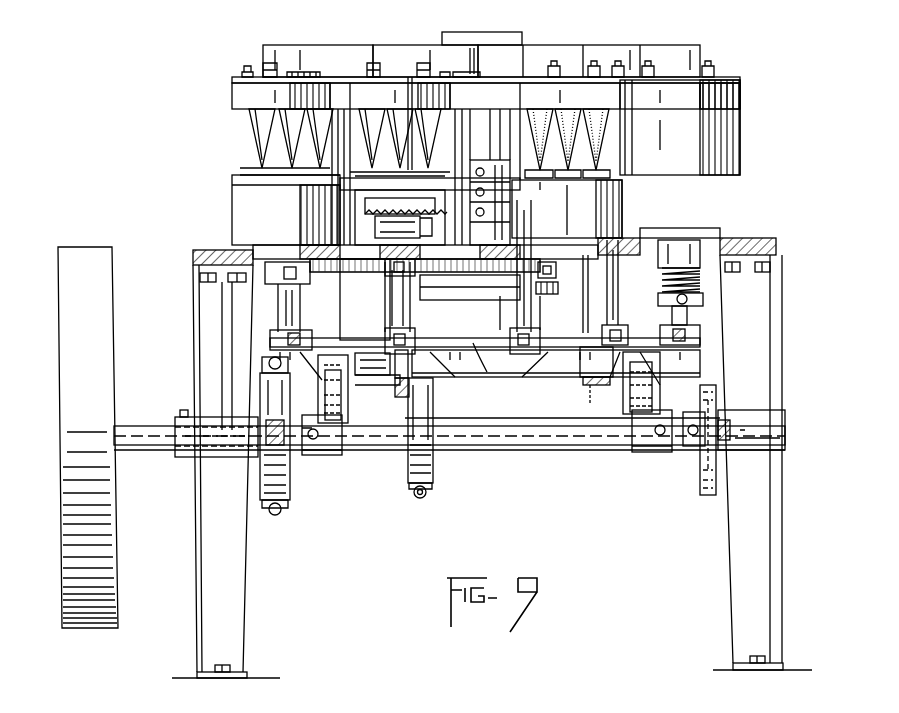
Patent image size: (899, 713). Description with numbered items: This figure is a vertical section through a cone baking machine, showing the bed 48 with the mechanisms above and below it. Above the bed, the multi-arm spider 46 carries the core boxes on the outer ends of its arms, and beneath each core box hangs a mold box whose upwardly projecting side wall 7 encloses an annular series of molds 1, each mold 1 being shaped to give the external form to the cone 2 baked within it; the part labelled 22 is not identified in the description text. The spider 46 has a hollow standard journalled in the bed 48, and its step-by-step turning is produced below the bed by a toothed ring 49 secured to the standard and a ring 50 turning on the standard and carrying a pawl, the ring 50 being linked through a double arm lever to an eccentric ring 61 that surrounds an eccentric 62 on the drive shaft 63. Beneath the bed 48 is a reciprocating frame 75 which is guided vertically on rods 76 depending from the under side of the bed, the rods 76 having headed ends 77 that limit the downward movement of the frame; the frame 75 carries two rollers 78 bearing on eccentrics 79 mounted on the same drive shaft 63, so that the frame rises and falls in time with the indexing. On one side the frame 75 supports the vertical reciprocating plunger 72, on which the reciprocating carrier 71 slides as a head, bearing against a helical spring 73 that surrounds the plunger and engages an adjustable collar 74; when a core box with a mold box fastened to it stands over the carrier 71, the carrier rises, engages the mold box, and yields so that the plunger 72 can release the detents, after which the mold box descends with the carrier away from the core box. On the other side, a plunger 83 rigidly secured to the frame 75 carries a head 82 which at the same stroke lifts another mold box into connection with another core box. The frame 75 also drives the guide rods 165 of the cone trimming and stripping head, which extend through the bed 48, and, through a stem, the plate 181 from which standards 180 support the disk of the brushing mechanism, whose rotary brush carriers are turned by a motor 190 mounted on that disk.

The mold 1 is at (292, 152).
The cone 2 is at (598, 143).
The side wall 7 is at (736, 140).
The cross head 22 is at (236, 100).
The multi-arm spider 46 is at (618, 45).
The bed 48 is at (633, 238).
The toothed ring 49 is at (492, 282).
The ring 50 is at (552, 284).
The eccentric ring 61 is at (409, 486).
The eccentric 62 is at (434, 462).
The drive shaft 63 is at (518, 446).
The reciprocating carrier 71 is at (712, 229).
The vertical reciprocating plunger 72 is at (688, 316).
The helical spring 73 is at (745, 250).
The adjustable collar 74 is at (702, 293).
The frame 75 is at (485, 365).
The rods 76 is at (368, 310).
The headed ends 77 is at (375, 397).
The rollers 78 is at (333, 412).
The eccentrics 79 is at (316, 456).
The head 82 is at (322, 268).
The plunger 83 is at (283, 297).
The guide rods 165 is at (532, 318).
The standards 180 is at (358, 202).
The plate 181 is at (362, 240).
The motor 190 is at (412, 150).